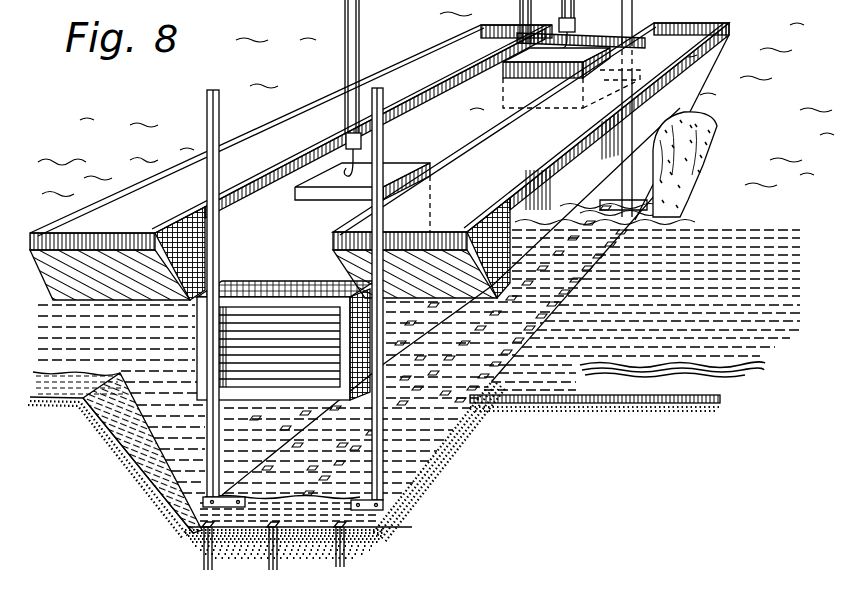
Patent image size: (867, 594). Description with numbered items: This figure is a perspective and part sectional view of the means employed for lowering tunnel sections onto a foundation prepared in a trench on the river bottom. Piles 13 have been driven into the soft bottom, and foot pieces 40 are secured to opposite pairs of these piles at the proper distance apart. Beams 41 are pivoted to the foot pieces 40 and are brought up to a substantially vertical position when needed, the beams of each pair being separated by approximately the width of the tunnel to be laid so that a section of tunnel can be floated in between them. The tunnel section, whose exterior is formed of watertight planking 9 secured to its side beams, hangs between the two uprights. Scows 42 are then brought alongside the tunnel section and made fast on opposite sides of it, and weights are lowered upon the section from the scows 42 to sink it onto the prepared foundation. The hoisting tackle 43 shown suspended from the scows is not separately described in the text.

The planking 9 is at (286, 340).
The piles 13 is at (333, 560).
The foot pieces 40 is at (183, 538).
The beams 41 is at (205, 100).
The scows 42 is at (379, 161).
The hoisting blocks / crates 43 is at (340, 172).